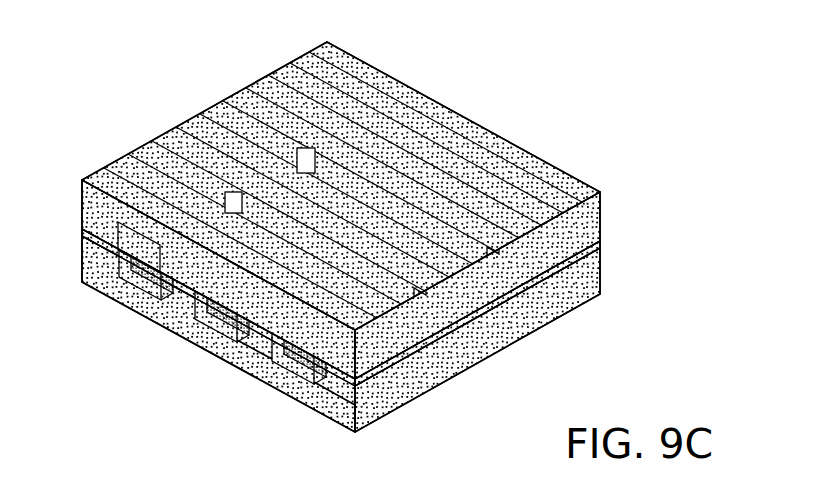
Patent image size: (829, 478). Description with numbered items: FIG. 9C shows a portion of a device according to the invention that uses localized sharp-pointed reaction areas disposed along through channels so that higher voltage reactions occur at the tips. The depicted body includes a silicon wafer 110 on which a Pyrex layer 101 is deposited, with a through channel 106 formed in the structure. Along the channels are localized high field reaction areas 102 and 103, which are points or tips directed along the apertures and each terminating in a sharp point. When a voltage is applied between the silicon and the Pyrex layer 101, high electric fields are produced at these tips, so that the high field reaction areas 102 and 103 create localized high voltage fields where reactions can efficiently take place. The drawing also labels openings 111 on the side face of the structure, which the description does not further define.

The Pyrex layer 101 is at (600, 243).
The high field reaction area 102 is at (302, 146).
The high field reaction area 103 is at (500, 252).
The through channel 106 is at (600, 192).
The silicon wafer 110 is at (600, 272).
The openings in side face 111 is at (134, 281).